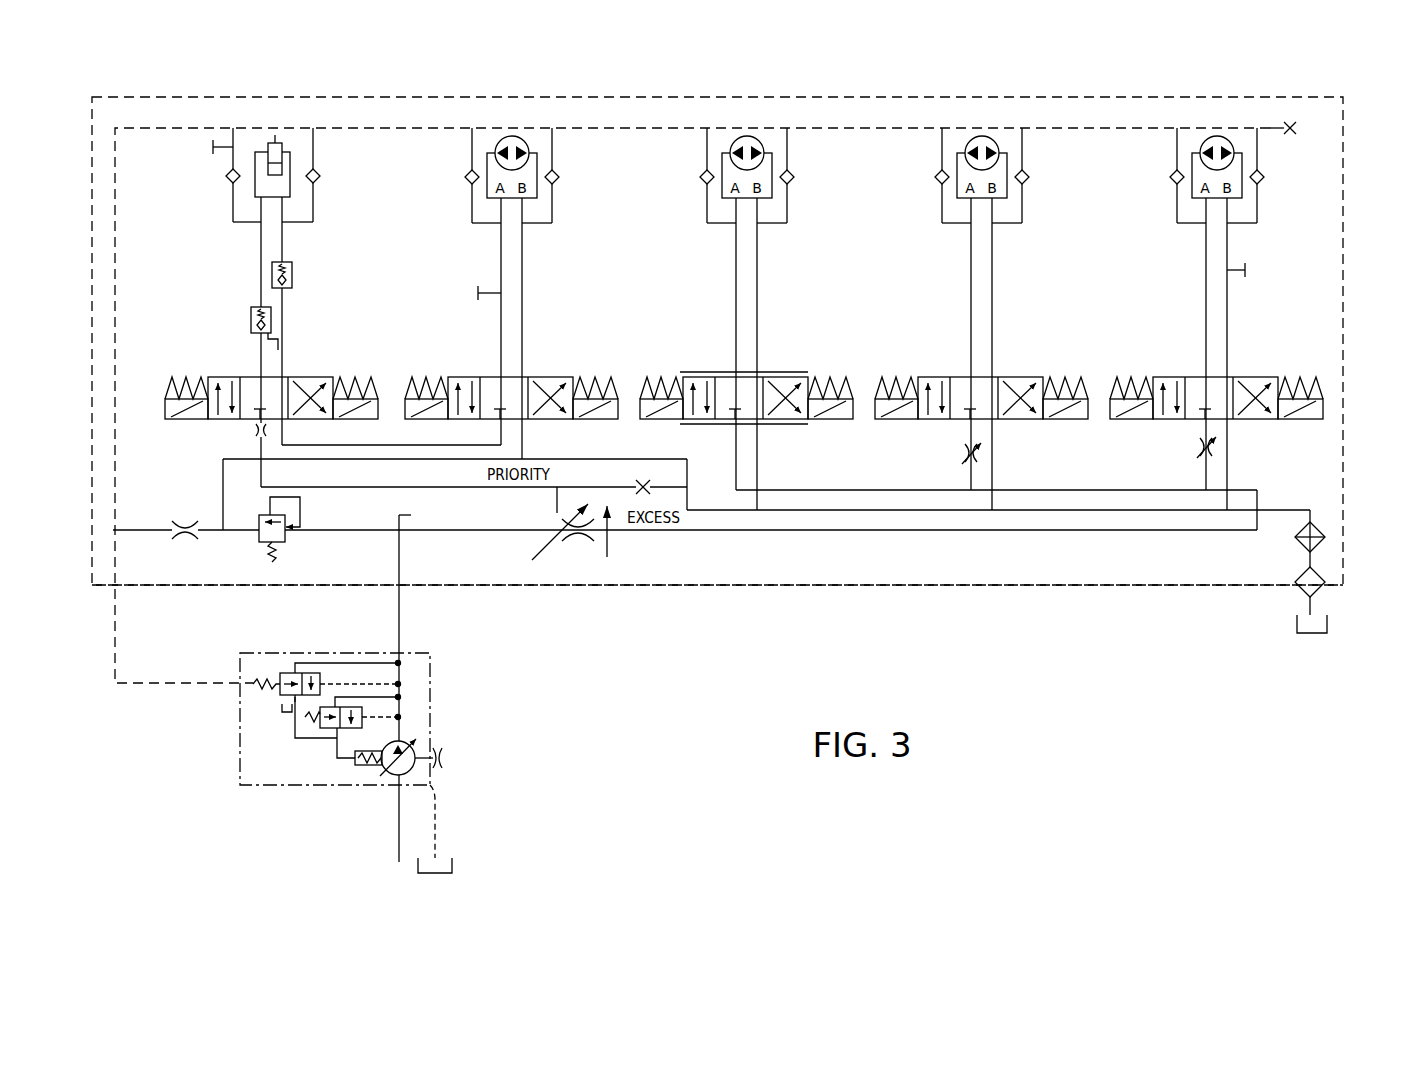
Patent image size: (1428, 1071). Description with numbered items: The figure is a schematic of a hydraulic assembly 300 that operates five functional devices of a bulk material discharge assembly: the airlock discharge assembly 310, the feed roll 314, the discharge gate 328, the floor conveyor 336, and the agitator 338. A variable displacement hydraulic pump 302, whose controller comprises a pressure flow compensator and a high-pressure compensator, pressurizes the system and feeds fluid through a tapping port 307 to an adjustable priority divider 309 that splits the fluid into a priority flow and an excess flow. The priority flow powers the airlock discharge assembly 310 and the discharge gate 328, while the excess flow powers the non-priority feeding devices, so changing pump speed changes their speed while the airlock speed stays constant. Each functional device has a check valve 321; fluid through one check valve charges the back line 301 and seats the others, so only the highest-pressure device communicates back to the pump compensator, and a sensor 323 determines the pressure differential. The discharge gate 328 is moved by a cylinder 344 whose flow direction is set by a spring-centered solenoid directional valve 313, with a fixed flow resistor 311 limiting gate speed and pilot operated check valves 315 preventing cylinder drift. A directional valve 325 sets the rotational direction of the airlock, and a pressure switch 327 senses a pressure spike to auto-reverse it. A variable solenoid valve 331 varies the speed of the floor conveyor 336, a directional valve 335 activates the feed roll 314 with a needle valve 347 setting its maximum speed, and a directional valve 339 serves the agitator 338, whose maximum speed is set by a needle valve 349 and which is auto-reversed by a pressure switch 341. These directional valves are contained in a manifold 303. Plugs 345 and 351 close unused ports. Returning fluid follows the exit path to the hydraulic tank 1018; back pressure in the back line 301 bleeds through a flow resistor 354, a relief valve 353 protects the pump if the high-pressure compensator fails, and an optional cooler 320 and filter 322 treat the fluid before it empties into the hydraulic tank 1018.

The hydraulic assembly 300 is at (717, 456).
The back line 301 is at (643, 127).
The variable displacement hydraulic pump 302 is at (389, 755).
The manifold 303 is at (717, 638).
The tapping port 307 is at (350, 662).
The adjustable priority divider 309 is at (552, 565).
The airlock discharge assembly 310 is at (531, 135).
The fixed flow resistor 311 is at (197, 440).
The directional valve 313 is at (277, 353).
The feed roll 314 is at (1001, 135).
The pilot operated check valve 315 is at (278, 287).
The cooler 320 is at (1346, 495).
The check valve 321 is at (781, 220).
The filter 322 is at (1354, 548).
The sensor 323 is at (195, 197).
The directional valve 325 is at (519, 353).
The pressure switch 327 is at (437, 328).
The discharge gate 328 is at (291, 139).
The variable solenoid valve 331 is at (755, 356).
The directional valve 335 is at (986, 355).
The floor conveyor 336 is at (765, 135).
The agitator 338 is at (1237, 137).
The directional valve 339 is at (1224, 355).
The pressure switch 341 is at (1186, 257).
The cylinder 344 is at (268, 150).
The plug 345 is at (1329, 90).
The needle valve 347 is at (906, 445).
The needle valve 349 is at (1134, 443).
The plug 351 is at (593, 459).
The relief valve 353 is at (254, 570).
The flow resistor 354 is at (164, 582).
The hydraulic tank 1018 is at (872, 744).